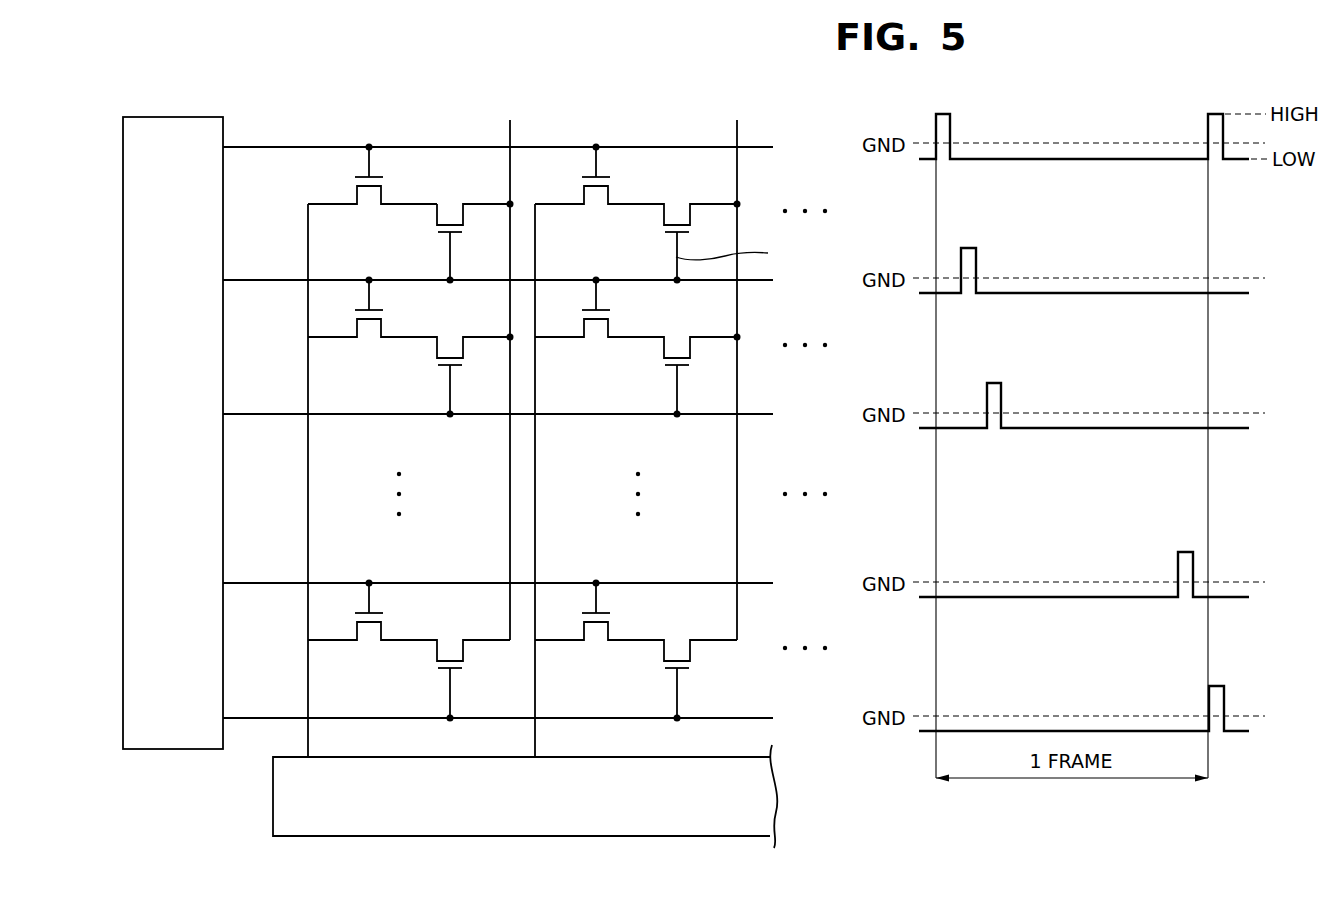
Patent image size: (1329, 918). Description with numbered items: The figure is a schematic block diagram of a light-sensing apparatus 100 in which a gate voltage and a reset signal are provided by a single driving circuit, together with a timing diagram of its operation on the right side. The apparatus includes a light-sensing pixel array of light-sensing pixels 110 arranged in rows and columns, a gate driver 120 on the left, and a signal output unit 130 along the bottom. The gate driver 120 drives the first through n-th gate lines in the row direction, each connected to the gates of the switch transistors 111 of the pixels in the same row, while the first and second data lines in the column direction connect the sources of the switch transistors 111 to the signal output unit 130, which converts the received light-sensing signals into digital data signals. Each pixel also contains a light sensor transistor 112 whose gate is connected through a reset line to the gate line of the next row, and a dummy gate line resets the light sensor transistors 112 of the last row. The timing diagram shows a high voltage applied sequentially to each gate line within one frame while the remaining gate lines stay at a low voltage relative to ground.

The light-sensing apparatus 100 is at (175, 829).
The light-sensing pixel 110 is at (425, 128).
The switch transistor 111 is at (370, 214).
The light sensor transistor 112 is at (447, 202).
The gate driver 120 is at (173, 122).
The signal output unit 130 is at (273, 797).